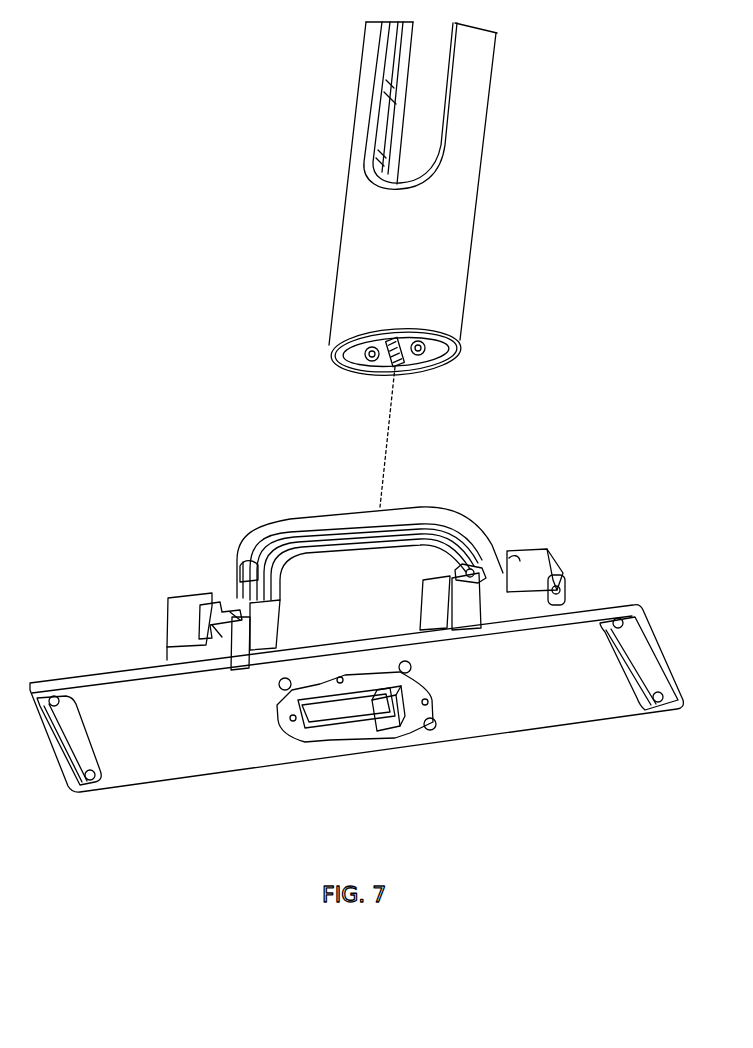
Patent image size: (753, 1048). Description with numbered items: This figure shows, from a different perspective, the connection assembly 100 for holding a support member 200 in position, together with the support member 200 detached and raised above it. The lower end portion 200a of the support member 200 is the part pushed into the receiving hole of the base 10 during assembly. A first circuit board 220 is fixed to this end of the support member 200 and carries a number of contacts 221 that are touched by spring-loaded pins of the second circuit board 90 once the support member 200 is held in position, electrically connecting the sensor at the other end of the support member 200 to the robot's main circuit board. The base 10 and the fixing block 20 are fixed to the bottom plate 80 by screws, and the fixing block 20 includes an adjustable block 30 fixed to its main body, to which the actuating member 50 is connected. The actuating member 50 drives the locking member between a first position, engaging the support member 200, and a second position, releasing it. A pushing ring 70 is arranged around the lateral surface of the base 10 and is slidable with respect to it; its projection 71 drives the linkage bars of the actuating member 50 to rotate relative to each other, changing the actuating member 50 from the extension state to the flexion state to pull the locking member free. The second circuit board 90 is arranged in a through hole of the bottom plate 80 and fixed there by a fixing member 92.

The support member 200 is at (340, 216).
The lower end portion 200a is at (378, 313).
The first circuit board 220 is at (348, 350).
The contacts 221 is at (388, 359).
The base 10 is at (343, 597).
The pushing ring 70 is at (293, 527).
The projection 71 is at (240, 568).
The adjustable block 30 is at (183, 617).
The fixing block 20 is at (205, 655).
The connection assembly 100 is at (560, 593).
The actuating member 50 is at (233, 617).
The bottom plate 80 is at (170, 705).
The second circuit board 90 is at (334, 712).
The fixing member 92 is at (373, 722).